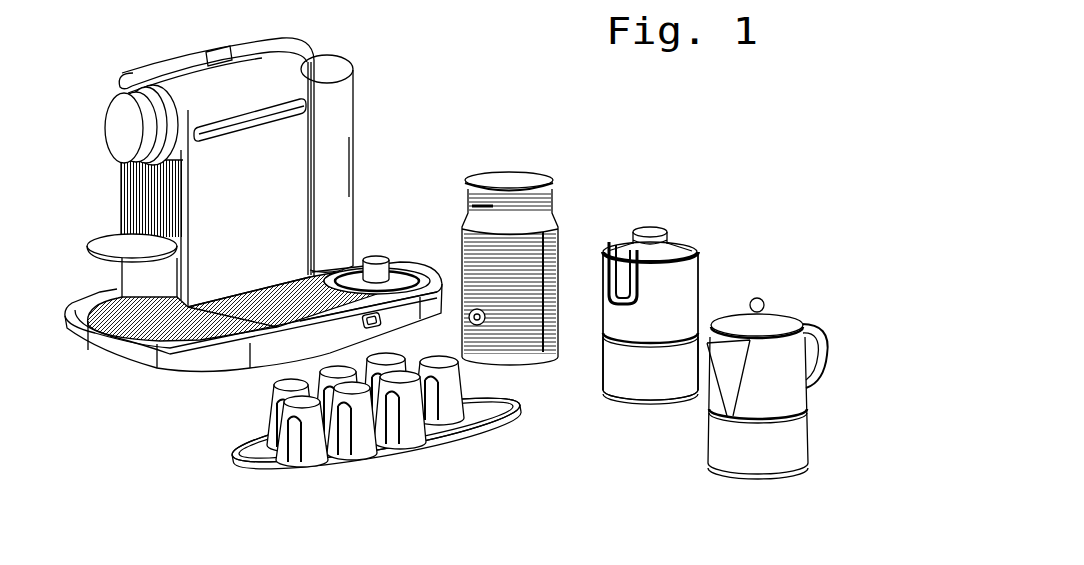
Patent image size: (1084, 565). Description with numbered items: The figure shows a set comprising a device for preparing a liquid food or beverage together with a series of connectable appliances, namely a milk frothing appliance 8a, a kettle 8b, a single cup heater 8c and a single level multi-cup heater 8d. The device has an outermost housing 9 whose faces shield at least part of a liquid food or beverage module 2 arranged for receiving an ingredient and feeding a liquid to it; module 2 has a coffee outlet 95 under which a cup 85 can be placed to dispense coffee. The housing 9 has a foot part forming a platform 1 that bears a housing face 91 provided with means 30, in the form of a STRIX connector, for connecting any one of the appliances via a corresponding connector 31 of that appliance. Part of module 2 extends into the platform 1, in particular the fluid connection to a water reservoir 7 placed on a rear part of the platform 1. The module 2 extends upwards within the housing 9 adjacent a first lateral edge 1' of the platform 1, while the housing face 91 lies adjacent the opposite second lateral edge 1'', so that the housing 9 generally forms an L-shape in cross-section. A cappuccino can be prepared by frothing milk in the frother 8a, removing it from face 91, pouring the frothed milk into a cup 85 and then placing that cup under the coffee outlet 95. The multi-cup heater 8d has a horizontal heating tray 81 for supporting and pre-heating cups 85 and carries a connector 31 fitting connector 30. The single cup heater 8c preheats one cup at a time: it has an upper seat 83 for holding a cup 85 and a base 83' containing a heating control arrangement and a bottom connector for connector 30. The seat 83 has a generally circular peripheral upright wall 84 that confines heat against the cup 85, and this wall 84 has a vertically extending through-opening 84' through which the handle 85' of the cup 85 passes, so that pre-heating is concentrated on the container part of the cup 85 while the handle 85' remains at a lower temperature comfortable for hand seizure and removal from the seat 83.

The platform 1 is at (249, 338).
The first lateral edge 1' is at (99, 265).
The second lateral edge 1'' is at (368, 323).
The liquid food or beverage module 2 is at (125, 120).
The coffee outlet 95 is at (127, 148).
The water reservoir 7 is at (358, 83).
The housing 9 is at (308, 297).
The connector 30 is at (378, 258).
The housing face 91 is at (410, 270).
The milk frothing appliance 8a is at (502, 167).
The kettle 8b is at (772, 277).
The single cup heater 8c is at (627, 418).
The single level multi-cup heater 8d is at (373, 477).
The upper seat 83 is at (675, 218).
The base 83' is at (650, 389).
The peripheral upright wall 84 is at (672, 314).
The through-opening 84' is at (603, 252).
The cup 85 is at (456, 342).
The handle 85' is at (622, 237).
The heating tray 81 is at (250, 448).
The connector 31 is at (492, 403).